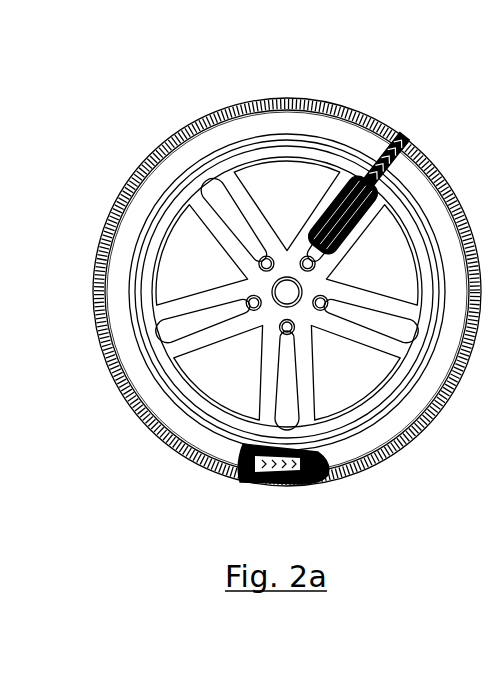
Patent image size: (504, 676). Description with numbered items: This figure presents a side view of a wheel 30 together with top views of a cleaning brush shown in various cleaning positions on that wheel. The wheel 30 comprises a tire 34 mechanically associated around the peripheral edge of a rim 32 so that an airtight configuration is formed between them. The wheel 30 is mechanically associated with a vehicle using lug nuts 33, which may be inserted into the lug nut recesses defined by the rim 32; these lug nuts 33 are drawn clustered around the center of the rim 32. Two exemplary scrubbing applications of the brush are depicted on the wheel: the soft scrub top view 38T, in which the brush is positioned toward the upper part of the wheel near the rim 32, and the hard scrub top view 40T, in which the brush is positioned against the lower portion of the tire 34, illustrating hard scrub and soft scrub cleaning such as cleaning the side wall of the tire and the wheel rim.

The wheel 30 is at (122, 137).
The rim 32 is at (240, 198).
The lug nuts 33 is at (260, 263).
The tire 34 is at (173, 419).
The soft scrub top view 38T is at (379, 128).
The hard scrub top view 40T is at (245, 477).